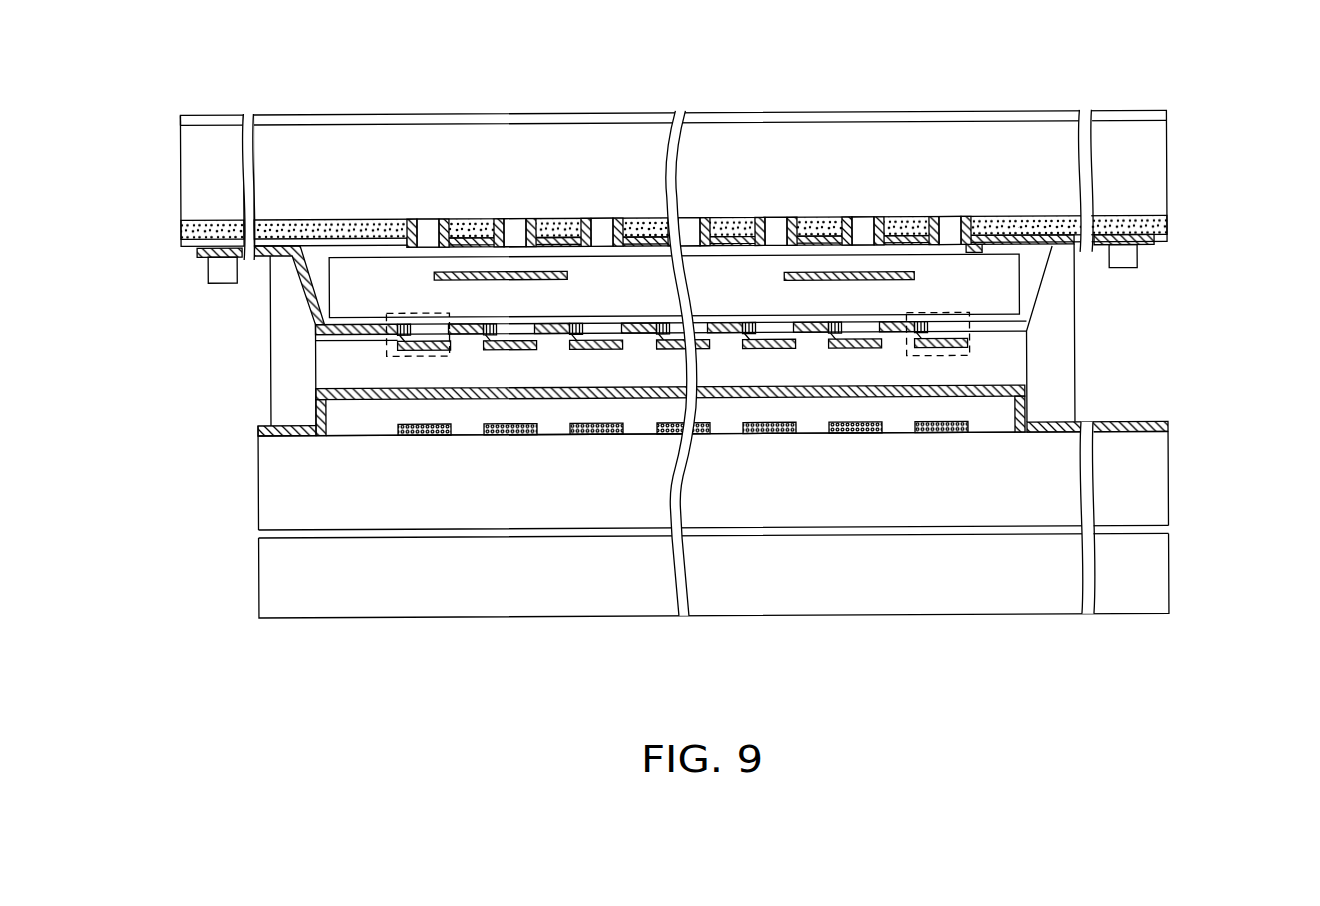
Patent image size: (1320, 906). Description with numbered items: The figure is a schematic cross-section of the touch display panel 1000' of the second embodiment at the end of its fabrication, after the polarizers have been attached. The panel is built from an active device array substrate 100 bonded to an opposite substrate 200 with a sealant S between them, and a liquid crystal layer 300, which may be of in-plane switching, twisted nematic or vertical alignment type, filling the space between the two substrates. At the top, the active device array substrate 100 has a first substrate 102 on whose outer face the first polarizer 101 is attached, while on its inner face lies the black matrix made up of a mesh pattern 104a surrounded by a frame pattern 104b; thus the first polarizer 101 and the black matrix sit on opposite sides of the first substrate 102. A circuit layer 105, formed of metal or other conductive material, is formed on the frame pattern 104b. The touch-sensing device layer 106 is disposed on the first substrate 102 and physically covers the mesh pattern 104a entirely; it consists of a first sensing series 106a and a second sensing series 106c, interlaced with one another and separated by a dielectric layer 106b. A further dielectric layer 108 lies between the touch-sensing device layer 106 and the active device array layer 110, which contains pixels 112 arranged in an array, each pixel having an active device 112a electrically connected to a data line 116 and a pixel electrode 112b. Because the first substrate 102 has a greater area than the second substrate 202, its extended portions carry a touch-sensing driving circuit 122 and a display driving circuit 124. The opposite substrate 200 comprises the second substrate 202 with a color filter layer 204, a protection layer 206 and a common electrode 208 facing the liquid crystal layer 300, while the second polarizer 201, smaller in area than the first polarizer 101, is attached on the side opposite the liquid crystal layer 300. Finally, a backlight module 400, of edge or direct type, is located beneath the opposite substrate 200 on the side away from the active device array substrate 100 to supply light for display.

The active device array substrate 100 is at (1245, 133).
The first polarizer 101 is at (1168, 116).
The first substrate 102 is at (192, 166).
The mesh pattern 104a is at (458, 220).
The frame pattern 104b is at (192, 228).
The circuit layer 105 is at (1150, 246).
The touch-sensing device layer 106 is at (460, 66).
The first sensing series 106a is at (445, 236).
The dielectric layer 106b is at (514, 234).
The second sensing series 106c is at (552, 273).
The dielectric layer 108 is at (622, 283).
The active device array layer 110 is at (1037, 319).
The pixel 112 is at (440, 314).
The active device 112a is at (404, 323).
The pixel electrode 112b is at (432, 352).
The data line 116 is at (390, 341).
The touch-sensing driving circuit 122 is at (1135, 262).
The display driving circuit 124 is at (224, 270).
The opposite substrate 200 is at (1254, 384).
The second polarizer 201 is at (1160, 536).
The second substrate 202 is at (1158, 486).
The color filter layer 204 is at (424, 436).
The protection layer 206 is at (998, 436).
The common electrode 208 is at (1166, 431).
The liquid crystal layer 300 is at (1010, 394).
The backlight module 400 is at (1160, 590).
The sealant S is at (290, 385).
The touch display panel 1000' is at (1188, 713).